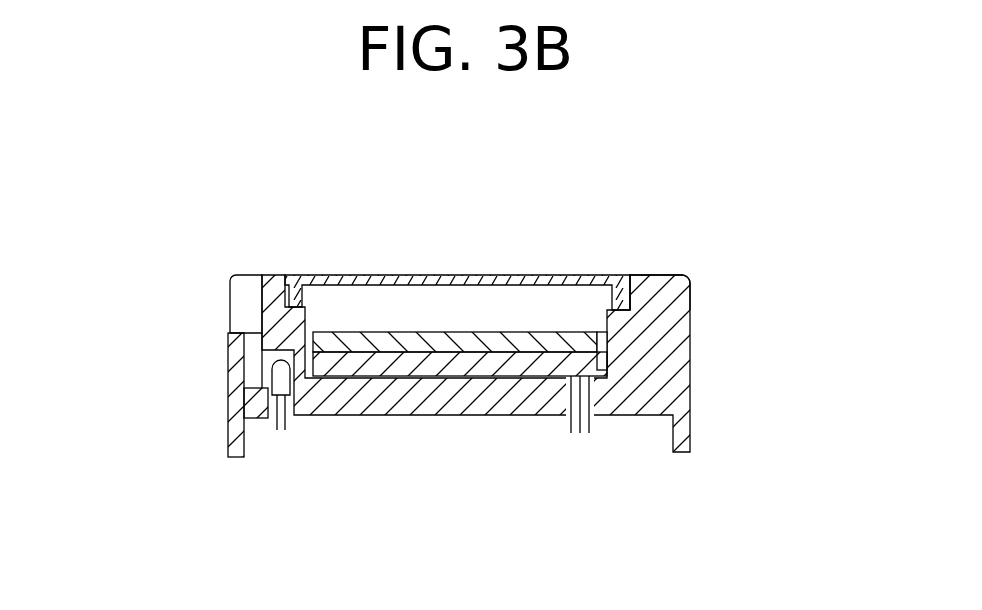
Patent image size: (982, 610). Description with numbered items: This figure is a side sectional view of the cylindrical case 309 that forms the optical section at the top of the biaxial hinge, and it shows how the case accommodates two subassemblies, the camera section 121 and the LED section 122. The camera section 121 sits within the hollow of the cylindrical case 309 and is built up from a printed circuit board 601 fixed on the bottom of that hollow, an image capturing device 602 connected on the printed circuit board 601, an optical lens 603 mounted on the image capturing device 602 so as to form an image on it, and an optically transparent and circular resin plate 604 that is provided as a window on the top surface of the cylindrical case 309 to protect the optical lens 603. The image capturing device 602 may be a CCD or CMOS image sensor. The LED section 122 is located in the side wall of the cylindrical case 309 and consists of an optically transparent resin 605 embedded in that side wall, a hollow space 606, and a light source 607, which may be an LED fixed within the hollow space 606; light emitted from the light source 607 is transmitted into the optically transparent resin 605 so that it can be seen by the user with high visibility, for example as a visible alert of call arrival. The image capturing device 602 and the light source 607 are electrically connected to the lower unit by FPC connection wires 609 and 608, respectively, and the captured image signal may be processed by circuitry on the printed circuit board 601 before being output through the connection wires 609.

The camera section 121 is at (305, 256).
The LED section 122 is at (195, 262).
The cylindrical case 309 is at (663, 282).
The printed circuit board 601 is at (612, 380).
The image capturing device 602 is at (607, 362).
The optical lens 603 is at (690, 327).
The optically transparent resin plate 604 is at (561, 272).
The optically transparent resin 605 is at (229, 298).
The hollow space 606 is at (228, 365).
The light source 607 is at (262, 390).
The FPC connection wires 608 is at (280, 428).
The FPC connection wires 609 is at (592, 430).